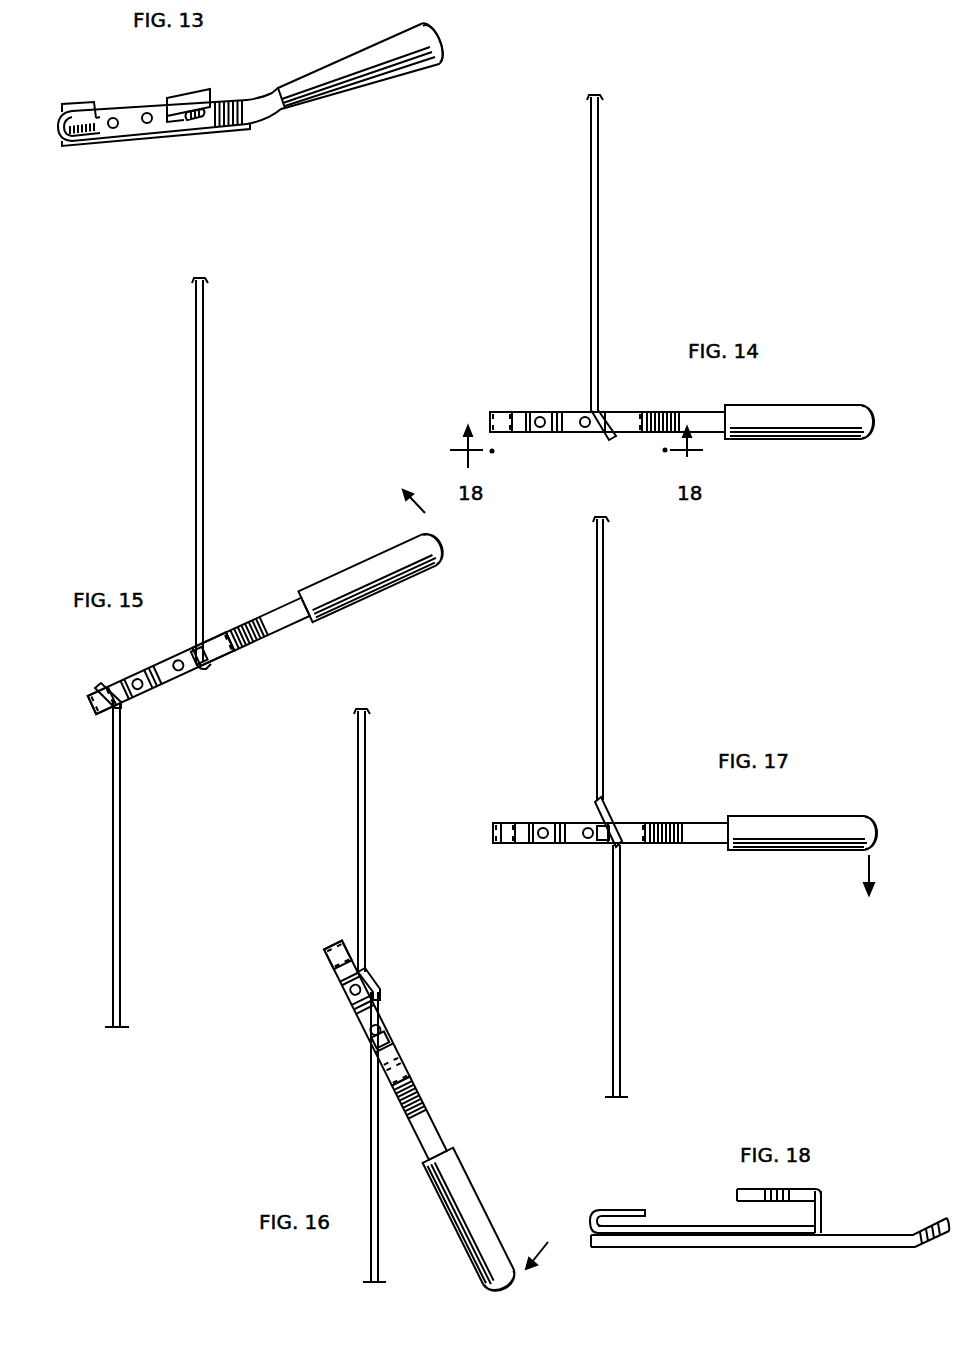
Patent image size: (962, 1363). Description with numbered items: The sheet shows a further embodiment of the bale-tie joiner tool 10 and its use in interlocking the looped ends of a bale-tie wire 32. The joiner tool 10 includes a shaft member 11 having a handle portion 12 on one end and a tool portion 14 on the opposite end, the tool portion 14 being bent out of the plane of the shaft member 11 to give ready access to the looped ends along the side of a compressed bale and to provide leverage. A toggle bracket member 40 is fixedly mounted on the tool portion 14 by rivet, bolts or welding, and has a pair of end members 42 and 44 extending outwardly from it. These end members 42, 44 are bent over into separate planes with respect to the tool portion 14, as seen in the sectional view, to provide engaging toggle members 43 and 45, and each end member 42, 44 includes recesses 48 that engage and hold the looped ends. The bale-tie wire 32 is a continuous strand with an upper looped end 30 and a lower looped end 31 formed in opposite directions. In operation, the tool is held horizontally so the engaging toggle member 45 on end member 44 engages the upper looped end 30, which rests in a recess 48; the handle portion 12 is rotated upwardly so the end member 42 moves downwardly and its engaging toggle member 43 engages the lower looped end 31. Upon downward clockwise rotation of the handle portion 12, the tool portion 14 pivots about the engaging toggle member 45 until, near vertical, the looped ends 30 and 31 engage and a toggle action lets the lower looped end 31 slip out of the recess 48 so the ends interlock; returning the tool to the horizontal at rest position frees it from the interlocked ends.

In FIG. 13, the bale-tie joiner tool 10 is at (163, 81).
In FIG. 13, the shaft member 11 is at (258, 98).
In FIG. 14, the shaft member 11 is at (714, 411).
In FIG. 15, the shaft member 11 is at (283, 616).
In FIG. 16, the shaft member 11 is at (431, 1130).
In FIG. 17, the shaft member 11 is at (706, 831).
In FIG. 18, the shaft member 11 is at (870, 1240).
In FIG. 13, the handle portion 12 is at (377, 70).
In FIG. 14, the handle portion 12 is at (806, 437).
In FIG. 15, the handle portion 12 is at (387, 589).
In FIG. 16, the handle portion 12 is at (489, 1205).
In FIG. 17, the handle portion 12 is at (811, 829).
In FIG. 13, the tool portion 14 is at (82, 148).
In FIG. 15, the upper looped end 30 is at (204, 673).
In FIG. 16, the upper looped end 30 is at (362, 1031).
In FIG. 17, the upper looped end 30 is at (598, 846).
In FIG. 14, the lower looped end 31 is at (586, 433).
In FIG. 15, the lower looped end 31 is at (102, 714).
In FIG. 16, the lower looped end 31 is at (373, 985).
In FIG. 17, the lower looped end 31 is at (606, 812).
In FIG. 14, the bale-tie wire 32 is at (592, 198).
In FIG. 15, the bale-tie wire 32 is at (204, 441).
In FIG. 16, the bale-tie wire 32 is at (366, 821).
In FIG. 17, the bale-tie wire 32 is at (605, 645).
In FIG. 13, the toggle bracket member 40 is at (127, 127).
In FIG. 15, the toggle bracket member 40 is at (148, 668).
In FIG. 18, the toggle bracket member 40 is at (716, 1238).
In FIG. 13, the end member 42 is at (58, 120).
In FIG. 18, the end member 42 is at (596, 1213).
In FIG. 13, the engaging toggle member 43 is at (75, 112).
In FIG. 14, the engaging toggle member 43 is at (502, 411).
In FIG. 15, the engaging toggle member 43 is at (126, 700).
In FIG. 17, the engaging toggle member 43 is at (518, 843).
In FIG. 18, the engaging toggle member 43 is at (622, 1206).
In FIG. 13, the end member 44 is at (195, 99).
In FIG. 18, the end member 44 is at (823, 1219).
In FIG. 13, the engaging toggle member 45 is at (170, 116).
In FIG. 14, the engaging toggle member 45 is at (637, 411).
In FIG. 15, the engaging toggle member 45 is at (190, 650).
In FIG. 17, the engaging toggle member 45 is at (644, 827).
In FIG. 18, the engaging toggle member 45 is at (823, 1193).
In FIG. 13, the recesses 48 is at (78, 100).
In FIG. 16, the recesses 48 is at (333, 967).
In FIG. 17, the recesses 48 is at (505, 840).